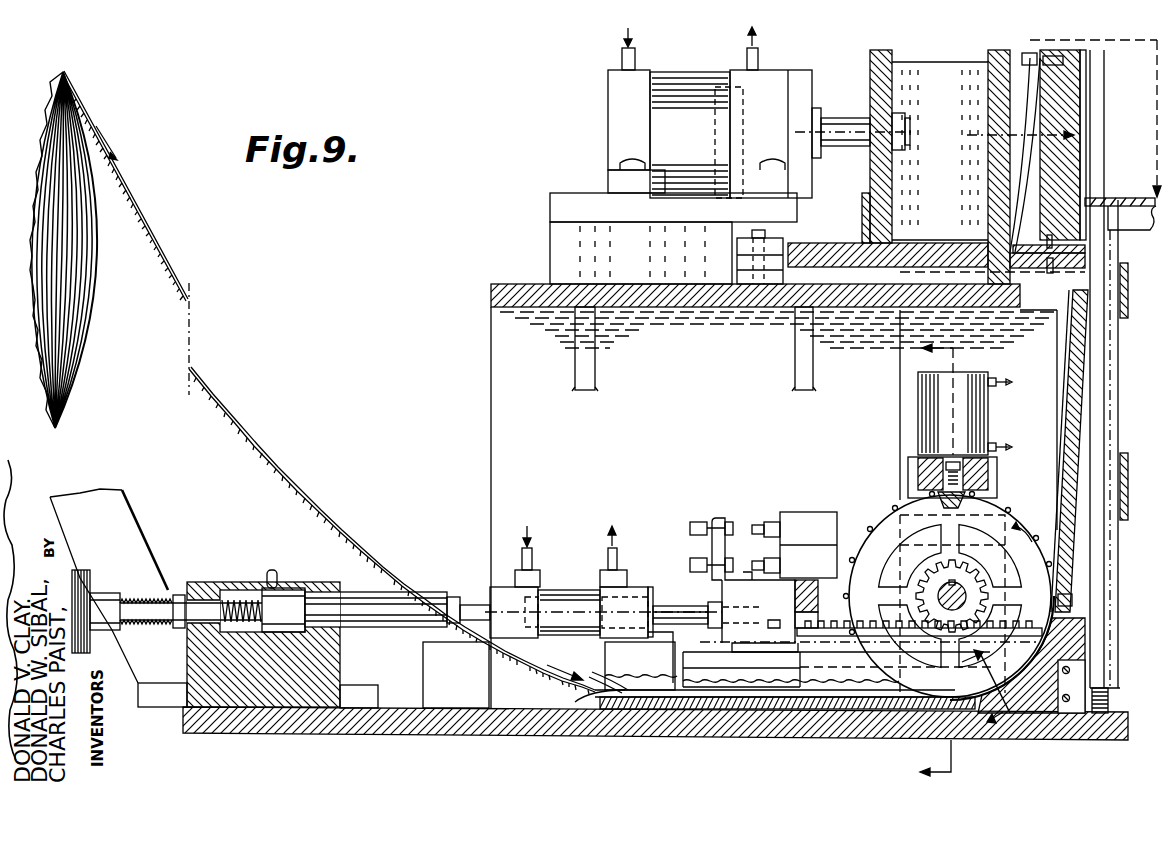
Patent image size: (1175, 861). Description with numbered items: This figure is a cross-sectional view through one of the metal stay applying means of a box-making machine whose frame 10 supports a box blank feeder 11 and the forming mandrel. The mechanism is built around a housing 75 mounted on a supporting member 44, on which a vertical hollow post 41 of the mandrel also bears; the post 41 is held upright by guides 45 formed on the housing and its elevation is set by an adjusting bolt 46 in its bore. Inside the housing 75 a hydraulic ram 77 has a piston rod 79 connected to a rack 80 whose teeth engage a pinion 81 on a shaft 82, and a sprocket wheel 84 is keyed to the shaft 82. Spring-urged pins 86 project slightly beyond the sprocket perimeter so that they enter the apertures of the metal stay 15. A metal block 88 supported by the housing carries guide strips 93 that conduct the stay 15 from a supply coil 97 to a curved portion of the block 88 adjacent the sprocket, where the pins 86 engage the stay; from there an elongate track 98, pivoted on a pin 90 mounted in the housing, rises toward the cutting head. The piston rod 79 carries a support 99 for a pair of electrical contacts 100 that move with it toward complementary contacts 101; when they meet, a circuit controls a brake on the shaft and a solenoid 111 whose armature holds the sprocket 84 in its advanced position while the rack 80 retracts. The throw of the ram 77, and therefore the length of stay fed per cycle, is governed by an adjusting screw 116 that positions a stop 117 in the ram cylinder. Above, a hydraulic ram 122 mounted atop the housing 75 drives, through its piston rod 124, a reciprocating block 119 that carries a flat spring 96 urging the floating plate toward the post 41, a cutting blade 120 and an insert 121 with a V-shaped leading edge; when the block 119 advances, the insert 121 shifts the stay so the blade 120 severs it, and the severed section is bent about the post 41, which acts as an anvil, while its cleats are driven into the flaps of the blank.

The frame 10 is at (926, 562).
The box blank feeder 11 is at (975, 688).
The metal stay 15 is at (328, 518).
The hollow post 41 is at (1118, 356).
The supporting member 44 is at (713, 728).
The guides 45 is at (1128, 284).
The adjusting bolt 46 is at (1110, 698).
The housing 75 is at (508, 365).
The hydraulic ram 77 is at (563, 594).
The piston rod 79 is at (675, 596).
The rack 80 is at (838, 629).
The pinion 81 is at (918, 592).
The shaft 82 is at (973, 592).
The sprocket wheel 84 is at (880, 527).
The pin 86 is at (1005, 522).
The metal block 88 is at (1028, 733).
The pin 90 is at (1070, 597).
The guide strips 93 is at (585, 689).
The flat spring 96 is at (1018, 170).
The supply coil 97 is at (88, 337).
The track 98 is at (1086, 418).
The support 99 is at (740, 608).
The electrical contacts 100 is at (712, 556).
The complementary contacts 101 is at (757, 536).
The solenoid 111 is at (990, 413).
The adjusting screw 116 is at (108, 594).
The stop 117 is at (472, 598).
The reciprocating block 119 is at (1063, 82).
The cutting blade 120 is at (1073, 248).
The insert 121 is at (1087, 118).
The hydraulic ram 122 is at (682, 82).
The piston rod 124 is at (838, 117).